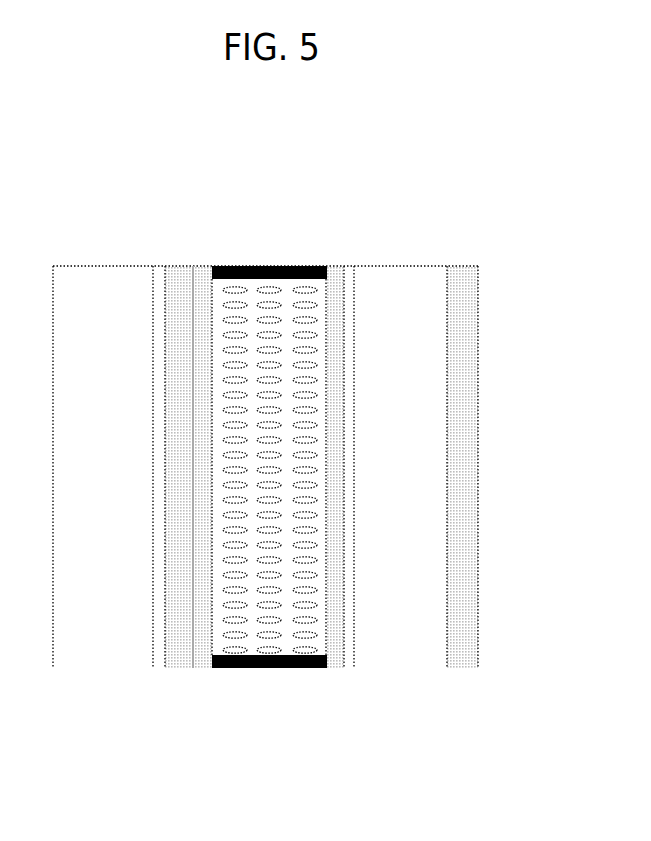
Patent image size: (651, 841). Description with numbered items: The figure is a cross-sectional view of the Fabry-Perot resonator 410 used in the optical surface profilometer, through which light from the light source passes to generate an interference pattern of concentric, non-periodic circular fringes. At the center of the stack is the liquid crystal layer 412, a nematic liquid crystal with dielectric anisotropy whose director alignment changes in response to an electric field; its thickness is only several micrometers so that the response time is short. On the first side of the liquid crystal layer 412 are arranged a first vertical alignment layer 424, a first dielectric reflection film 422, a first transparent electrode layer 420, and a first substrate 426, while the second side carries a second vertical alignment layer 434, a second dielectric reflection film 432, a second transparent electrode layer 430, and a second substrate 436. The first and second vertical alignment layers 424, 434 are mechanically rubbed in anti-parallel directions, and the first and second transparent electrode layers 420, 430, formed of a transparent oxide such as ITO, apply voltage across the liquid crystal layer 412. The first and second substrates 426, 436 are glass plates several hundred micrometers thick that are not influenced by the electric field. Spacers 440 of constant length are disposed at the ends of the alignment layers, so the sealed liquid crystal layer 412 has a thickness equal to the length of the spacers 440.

The Fabry-Perot resonator 410 is at (340, 200).
The liquid crystal layer 412 is at (270, 637).
The first transparent electrode layer 420 is at (158, 672).
The first dielectric reflection film 422 is at (182, 670).
The first vertical alignment layer 424 is at (204, 670).
The first substrate 426 is at (73, 668).
The second transparent electrode layer 430 is at (348, 670).
The second dielectric reflection film 432 is at (460, 670).
The second vertical alignment layer 434 is at (334, 670).
The second substrate 436 is at (390, 670).
The spacer 440 is at (248, 267).